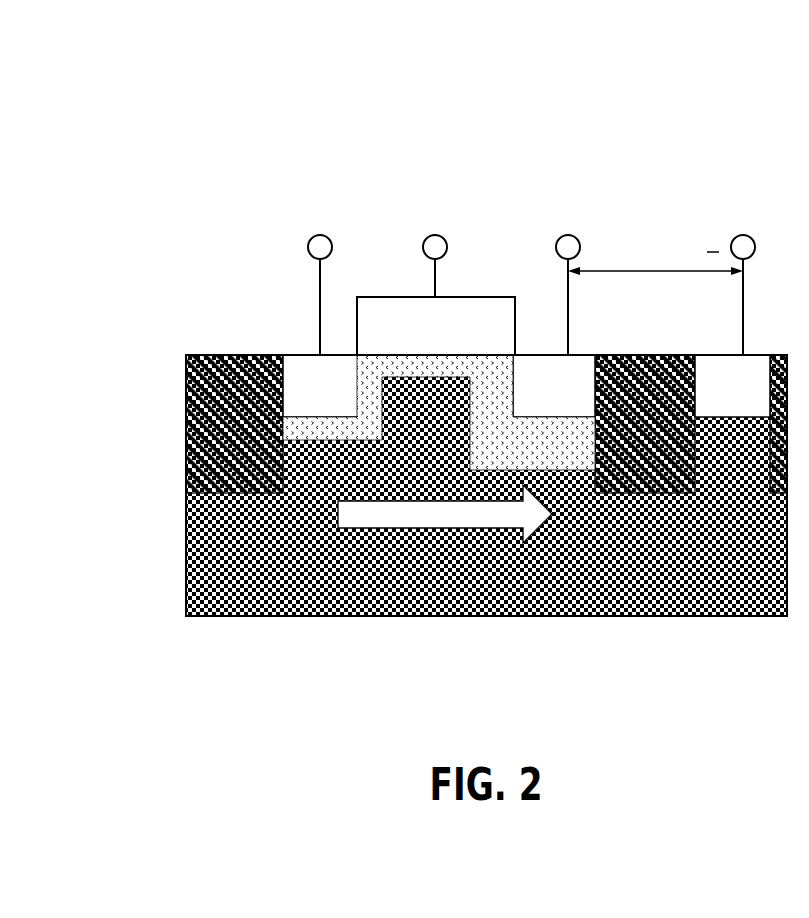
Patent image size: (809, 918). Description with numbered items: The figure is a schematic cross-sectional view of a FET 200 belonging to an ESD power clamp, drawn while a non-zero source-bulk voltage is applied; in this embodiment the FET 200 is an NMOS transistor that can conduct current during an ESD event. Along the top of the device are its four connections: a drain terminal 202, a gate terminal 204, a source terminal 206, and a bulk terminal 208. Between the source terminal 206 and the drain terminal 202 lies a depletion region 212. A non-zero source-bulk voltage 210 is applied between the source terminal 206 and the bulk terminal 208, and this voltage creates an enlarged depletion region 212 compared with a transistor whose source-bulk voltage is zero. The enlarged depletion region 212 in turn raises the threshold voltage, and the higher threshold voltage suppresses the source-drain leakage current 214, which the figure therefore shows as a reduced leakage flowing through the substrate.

The FET 200 is at (144, 105).
The drain terminal 202 is at (321, 190).
The gate terminal 204 is at (436, 190).
The source terminal 206 is at (570, 190).
The bulk terminal 208 is at (745, 190).
The source-bulk voltage VSB 210 is at (655, 267).
The depletion region 212 is at (439, 412).
The source-drain leakage current Isoff 214 is at (445, 514).